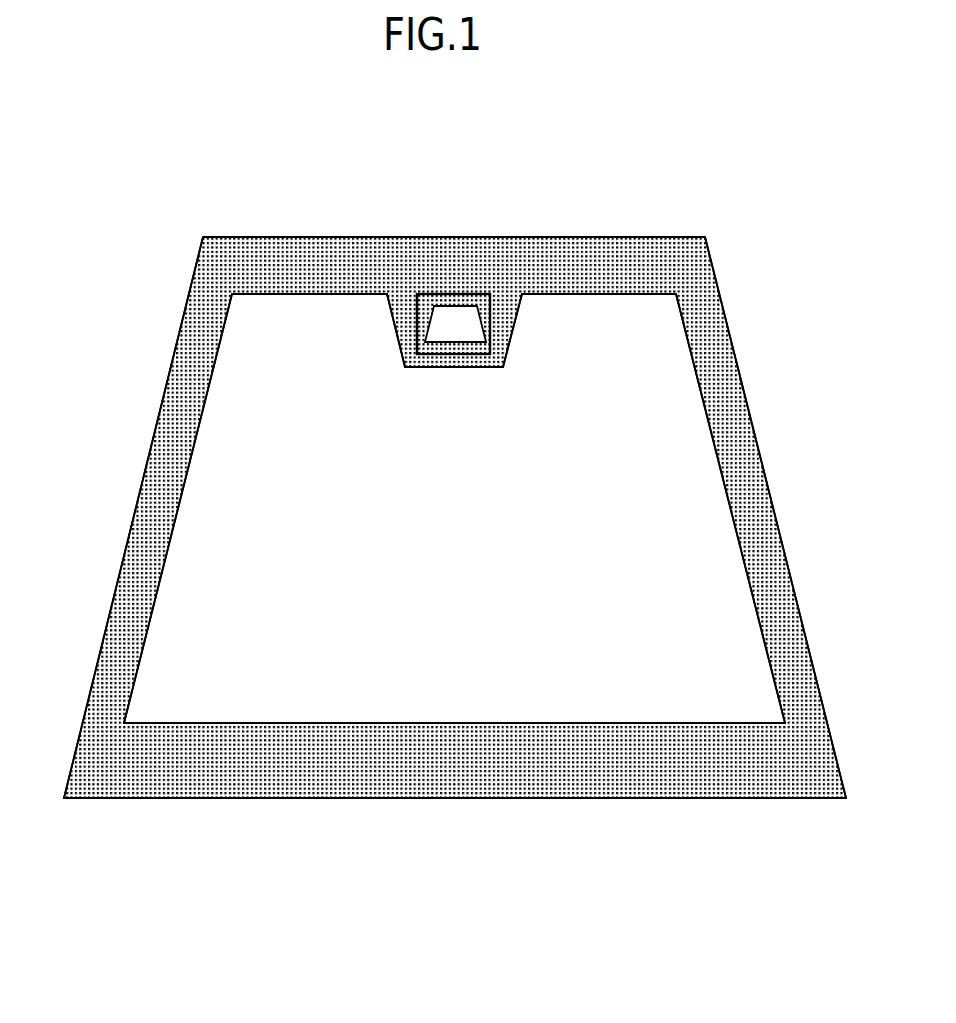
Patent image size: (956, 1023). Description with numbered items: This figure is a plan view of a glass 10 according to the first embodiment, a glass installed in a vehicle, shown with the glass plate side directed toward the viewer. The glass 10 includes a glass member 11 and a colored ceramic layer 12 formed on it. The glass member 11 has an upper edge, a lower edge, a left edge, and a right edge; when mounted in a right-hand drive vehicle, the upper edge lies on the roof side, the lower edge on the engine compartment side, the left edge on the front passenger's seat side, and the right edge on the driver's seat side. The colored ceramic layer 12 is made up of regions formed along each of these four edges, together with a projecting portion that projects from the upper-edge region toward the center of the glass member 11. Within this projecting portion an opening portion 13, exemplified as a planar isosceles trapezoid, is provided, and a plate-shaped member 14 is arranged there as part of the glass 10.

The glass 10 is at (57, 143).
The glass member 11 is at (668, 390).
The colored ceramic layer 12 is at (641, 229).
The opening portion 13 is at (460, 316).
The plate-shaped member 14 is at (425, 294).